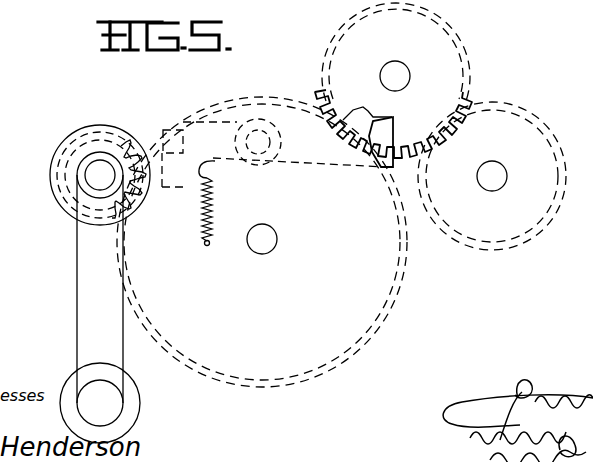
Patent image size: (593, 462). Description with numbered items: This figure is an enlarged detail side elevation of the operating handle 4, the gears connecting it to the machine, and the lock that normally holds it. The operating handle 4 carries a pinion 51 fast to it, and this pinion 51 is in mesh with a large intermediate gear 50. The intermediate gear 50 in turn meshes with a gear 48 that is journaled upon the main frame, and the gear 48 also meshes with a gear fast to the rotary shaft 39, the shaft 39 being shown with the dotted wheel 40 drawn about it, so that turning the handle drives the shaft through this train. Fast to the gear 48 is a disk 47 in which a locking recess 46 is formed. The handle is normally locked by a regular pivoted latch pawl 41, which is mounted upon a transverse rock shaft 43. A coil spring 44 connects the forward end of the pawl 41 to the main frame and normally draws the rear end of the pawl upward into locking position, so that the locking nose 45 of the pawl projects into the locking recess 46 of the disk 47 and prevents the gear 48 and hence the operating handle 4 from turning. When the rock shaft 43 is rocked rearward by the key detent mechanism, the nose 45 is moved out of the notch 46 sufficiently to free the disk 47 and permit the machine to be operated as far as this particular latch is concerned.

The operating handle 4 is at (100, 284).
The rotary shaft 39 is at (496, 184).
The gear wheel 40 is at (536, 119).
The latch pawl 41 is at (339, 160).
The rock shaft 43 is at (262, 143).
The coil spring 44 is at (200, 198).
The locking nose 45 is at (382, 135).
The locking recess 46 is at (353, 110).
The disk 47 is at (348, 25).
The gear 48 is at (462, 50).
The intermediate gear 50 is at (254, 118).
The pinion 51 is at (82, 147).